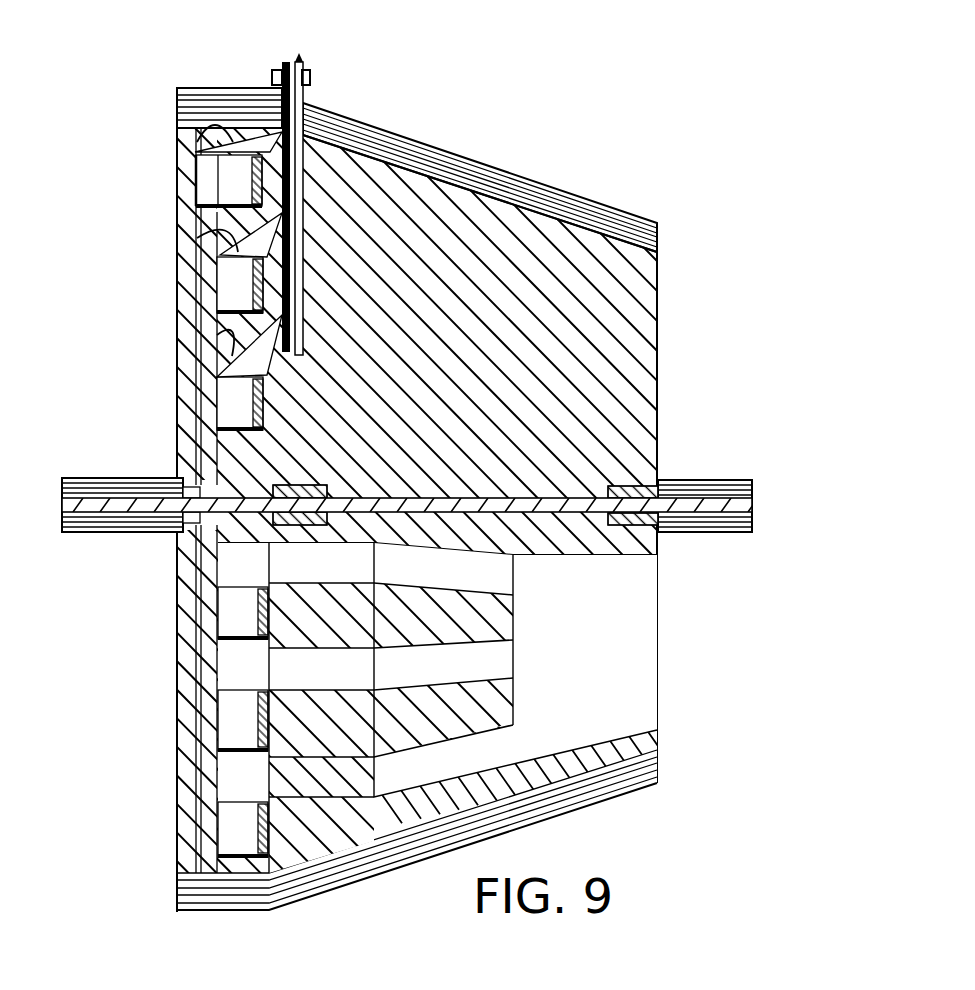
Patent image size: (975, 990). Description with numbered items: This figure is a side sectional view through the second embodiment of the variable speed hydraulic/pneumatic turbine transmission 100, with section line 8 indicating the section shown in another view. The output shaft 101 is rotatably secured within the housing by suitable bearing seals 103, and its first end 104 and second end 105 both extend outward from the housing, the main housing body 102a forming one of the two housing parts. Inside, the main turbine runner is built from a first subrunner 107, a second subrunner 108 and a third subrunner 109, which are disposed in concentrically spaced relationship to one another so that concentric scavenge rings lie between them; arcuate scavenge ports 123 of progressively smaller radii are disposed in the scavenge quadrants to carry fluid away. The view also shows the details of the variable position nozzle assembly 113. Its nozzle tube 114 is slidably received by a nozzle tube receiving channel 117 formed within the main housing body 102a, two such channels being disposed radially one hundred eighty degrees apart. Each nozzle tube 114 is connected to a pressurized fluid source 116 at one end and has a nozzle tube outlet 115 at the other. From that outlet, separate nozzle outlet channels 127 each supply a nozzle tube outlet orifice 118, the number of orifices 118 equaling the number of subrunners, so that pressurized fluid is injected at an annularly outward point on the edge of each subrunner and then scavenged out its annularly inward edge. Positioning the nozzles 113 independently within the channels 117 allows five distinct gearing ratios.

The section line 8- 8 is at (290, 25).
The variable speed hydraulic/pneumatic turbine transmission 100 is at (487, 495).
The output shaft 101 is at (680, 462).
The main housing body 102a is at (543, 188).
The bearing seals 103 is at (285, 480).
The first end 104 is at (62, 500).
The second end 105 is at (753, 505).
The first subrunner 107 is at (228, 193).
The second subrunner 108 is at (228, 293).
The third subrunner 109 is at (233, 395).
The variable position nozzle assembly 113 is at (306, 103).
The nozzle tube 114 is at (310, 88).
The nozzle tube outlet 115 is at (487, 495).
The pressurized fluid source 116 is at (303, 62).
The nozzle tube receiving channel 117 is at (480, 220).
The nozzle tube outlet orifice 118 is at (230, 177).
The arcuate scavenge ports 123 is at (468, 575).
The nozzle outlet channel 127 is at (200, 133).